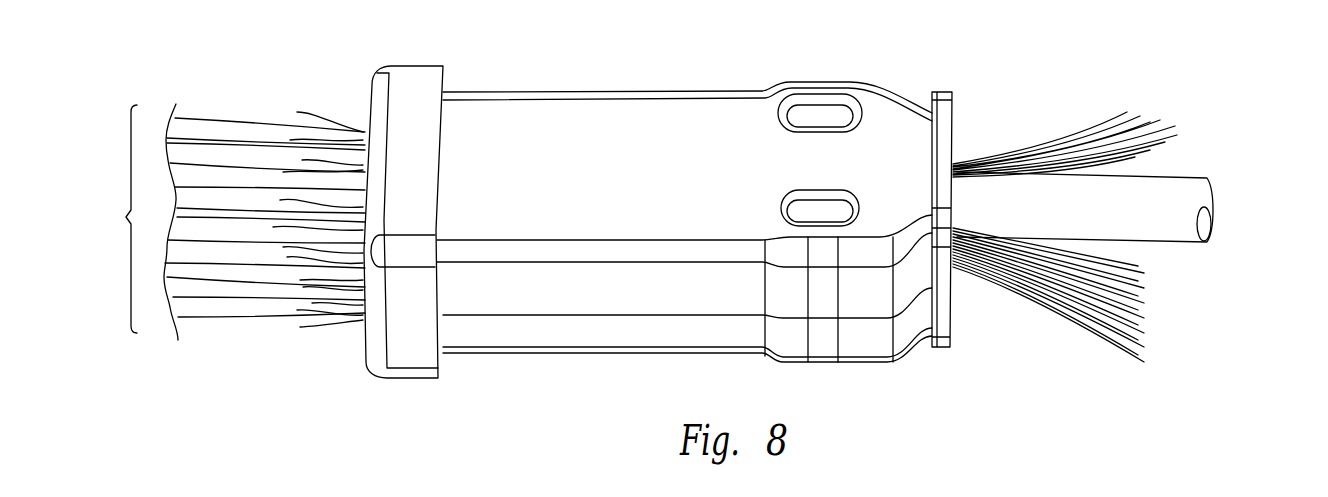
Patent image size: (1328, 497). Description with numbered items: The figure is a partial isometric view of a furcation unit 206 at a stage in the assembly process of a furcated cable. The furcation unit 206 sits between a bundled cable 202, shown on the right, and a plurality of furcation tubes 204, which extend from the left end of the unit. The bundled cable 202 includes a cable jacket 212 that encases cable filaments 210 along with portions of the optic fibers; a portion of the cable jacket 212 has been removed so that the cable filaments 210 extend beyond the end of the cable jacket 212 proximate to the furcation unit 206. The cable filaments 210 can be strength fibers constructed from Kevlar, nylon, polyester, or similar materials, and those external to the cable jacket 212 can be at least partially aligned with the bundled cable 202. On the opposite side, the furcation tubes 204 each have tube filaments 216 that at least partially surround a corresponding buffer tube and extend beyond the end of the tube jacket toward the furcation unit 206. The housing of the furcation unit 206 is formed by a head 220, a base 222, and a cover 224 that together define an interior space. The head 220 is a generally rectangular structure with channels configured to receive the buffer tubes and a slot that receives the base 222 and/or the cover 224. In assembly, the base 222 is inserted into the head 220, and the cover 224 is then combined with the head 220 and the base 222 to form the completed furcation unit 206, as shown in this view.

The bundled cable 202 is at (1194, 157).
The furcation tubes 204 is at (128, 219).
The furcation unit 206 is at (577, 336).
The cable filaments 210 is at (1082, 130).
The cable jacket 212 is at (1150, 232).
The tube filaments 216 is at (320, 187).
The head 220 is at (373, 355).
The base 222 is at (675, 336).
The cover 224 is at (671, 92).